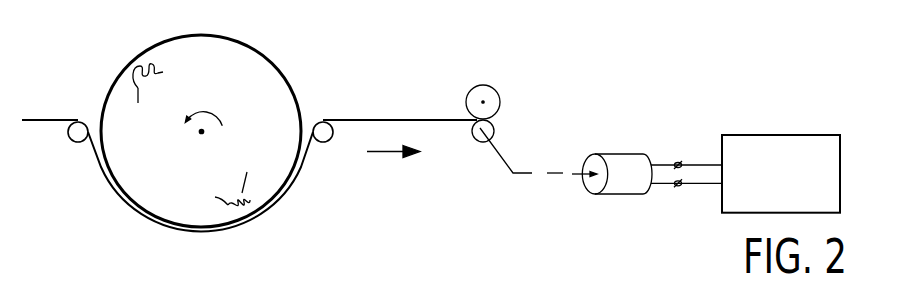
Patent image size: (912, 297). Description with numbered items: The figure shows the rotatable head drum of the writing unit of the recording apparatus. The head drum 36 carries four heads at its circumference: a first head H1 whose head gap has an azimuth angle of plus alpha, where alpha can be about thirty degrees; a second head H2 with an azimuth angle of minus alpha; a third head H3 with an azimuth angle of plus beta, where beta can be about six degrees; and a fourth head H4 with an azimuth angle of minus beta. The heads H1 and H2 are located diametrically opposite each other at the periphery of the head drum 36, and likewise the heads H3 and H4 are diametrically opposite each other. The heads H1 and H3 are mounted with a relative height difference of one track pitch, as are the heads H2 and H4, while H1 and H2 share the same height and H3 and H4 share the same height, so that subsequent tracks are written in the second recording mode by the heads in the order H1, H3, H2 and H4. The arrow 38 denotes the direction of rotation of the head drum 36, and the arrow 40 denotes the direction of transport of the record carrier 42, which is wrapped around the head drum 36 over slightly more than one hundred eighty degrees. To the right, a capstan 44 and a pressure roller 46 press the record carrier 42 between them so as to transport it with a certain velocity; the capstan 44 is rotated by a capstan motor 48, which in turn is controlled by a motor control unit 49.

The head drum 36 is at (115, 158).
The arrow 38 is at (216, 111).
The arrow 40 is at (390, 153).
The record carrier 42 is at (365, 123).
The capstan 44 is at (478, 148).
The pressure roller 46 is at (482, 90).
The capstan motor 48 is at (620, 185).
The motor control unit 49 is at (740, 143).
The first head H1 is at (147, 111).
The second head H2 is at (254, 175).
The third head H3 is at (183, 75).
The fourth head H4 is at (187, 191).